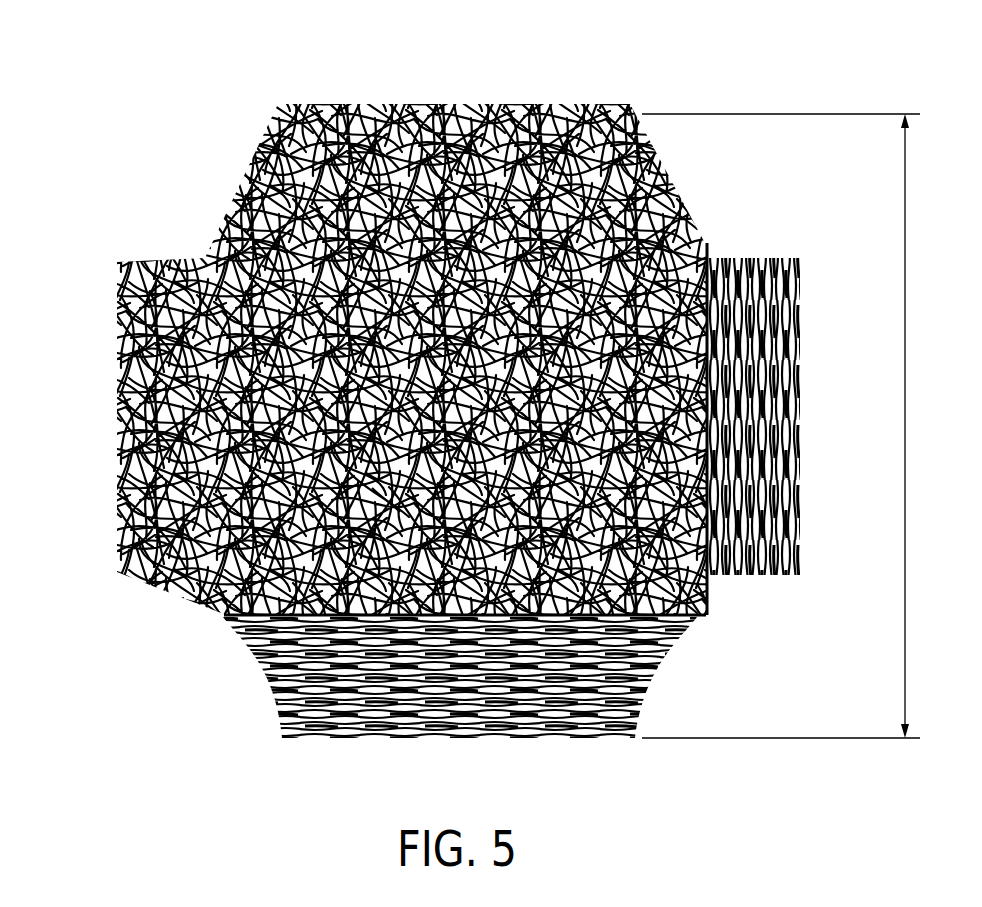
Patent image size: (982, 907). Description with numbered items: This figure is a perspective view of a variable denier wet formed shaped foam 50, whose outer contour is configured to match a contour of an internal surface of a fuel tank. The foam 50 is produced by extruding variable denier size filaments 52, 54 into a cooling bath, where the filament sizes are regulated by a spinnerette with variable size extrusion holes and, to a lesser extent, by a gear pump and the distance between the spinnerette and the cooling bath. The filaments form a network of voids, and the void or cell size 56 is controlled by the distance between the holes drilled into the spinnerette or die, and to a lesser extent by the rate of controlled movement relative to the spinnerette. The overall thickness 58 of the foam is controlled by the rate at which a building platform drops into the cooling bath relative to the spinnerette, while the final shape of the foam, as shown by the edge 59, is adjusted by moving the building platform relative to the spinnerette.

The variable denier wet formed shaped foam 50 is at (488, 371).
The variable denier size filament 52 is at (205, 262).
The variable denier size filament 54 is at (755, 282).
The void (or cell) size 56 is at (378, 497).
The overall thickness 58 is at (791, 426).
The edge 59 is at (690, 617).